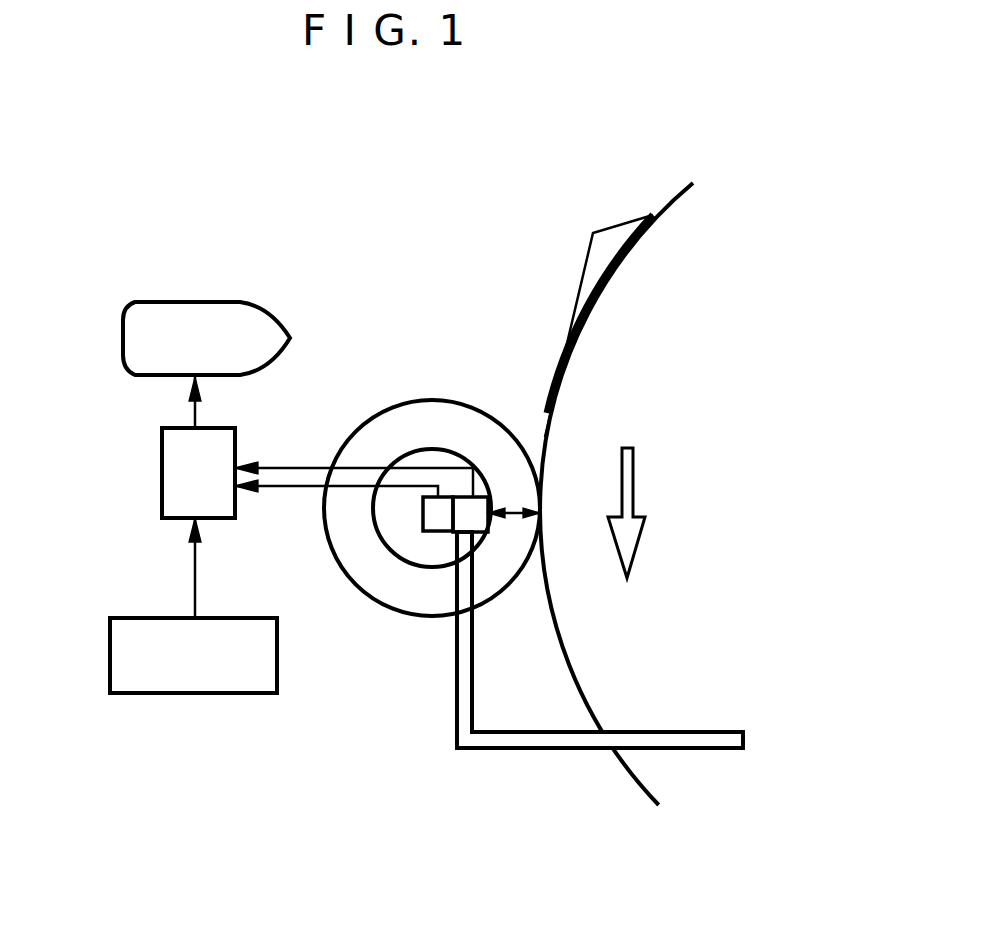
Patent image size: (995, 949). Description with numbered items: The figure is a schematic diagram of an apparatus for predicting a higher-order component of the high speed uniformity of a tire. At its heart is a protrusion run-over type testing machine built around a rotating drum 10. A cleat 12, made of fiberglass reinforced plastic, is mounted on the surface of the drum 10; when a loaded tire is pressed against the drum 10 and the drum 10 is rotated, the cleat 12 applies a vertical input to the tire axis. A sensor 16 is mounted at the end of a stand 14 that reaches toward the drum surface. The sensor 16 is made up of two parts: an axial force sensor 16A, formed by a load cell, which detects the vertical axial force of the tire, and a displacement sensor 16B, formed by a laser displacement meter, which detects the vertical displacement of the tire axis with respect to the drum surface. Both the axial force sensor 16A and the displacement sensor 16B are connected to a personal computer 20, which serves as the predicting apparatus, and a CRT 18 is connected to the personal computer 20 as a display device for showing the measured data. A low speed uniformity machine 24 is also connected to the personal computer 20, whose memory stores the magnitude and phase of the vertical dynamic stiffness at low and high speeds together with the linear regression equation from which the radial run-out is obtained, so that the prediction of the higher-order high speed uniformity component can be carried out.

The drum 10 is at (622, 767).
The cleat 12 is at (608, 240).
The bracket / support arm 14 is at (502, 752).
The sensor 16 is at (384, 532).
The axial force sensor 16A is at (433, 523).
The displacement sensor 16B is at (473, 522).
The CRT 18 is at (196, 310).
The personal computer 20 is at (162, 470).
The low speed uniformity machine 24 is at (195, 687).